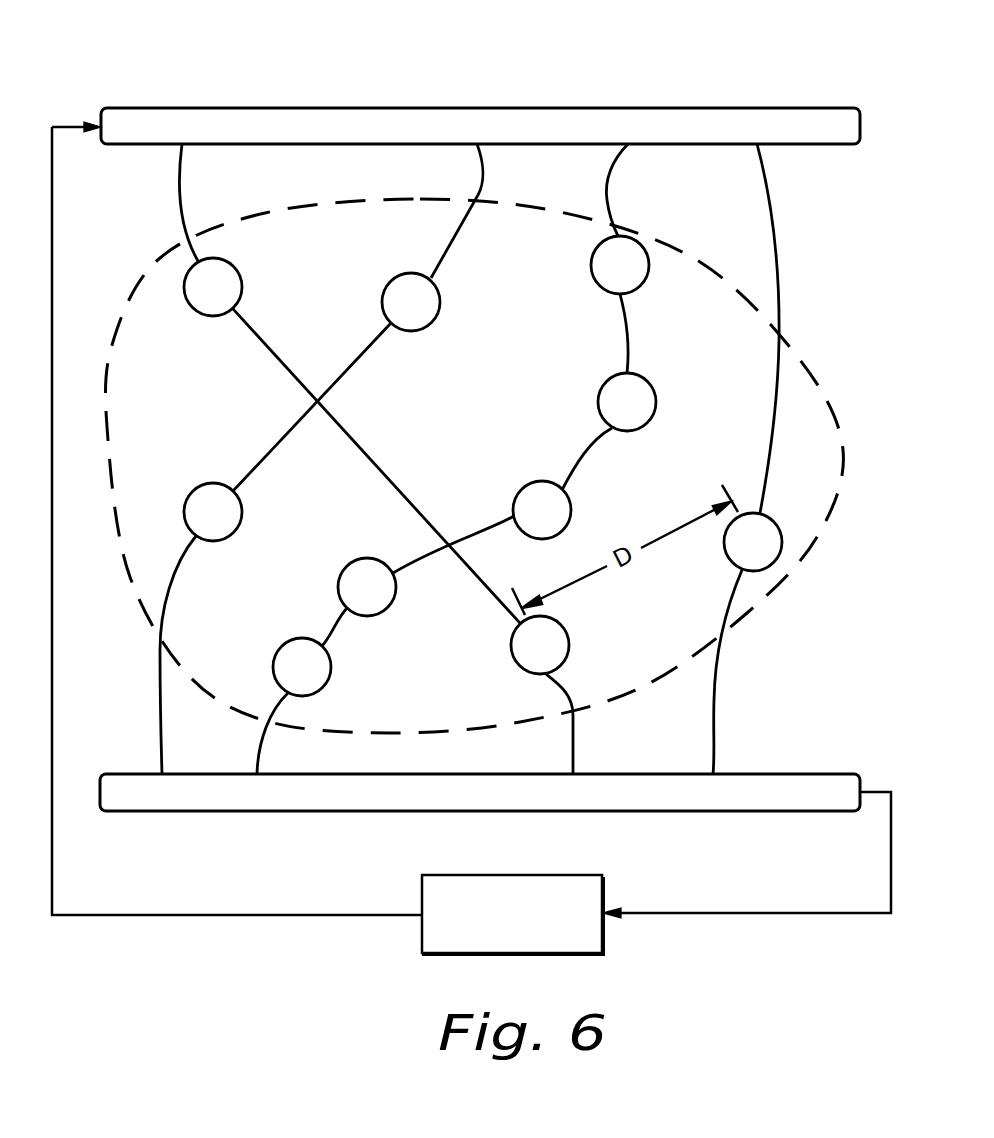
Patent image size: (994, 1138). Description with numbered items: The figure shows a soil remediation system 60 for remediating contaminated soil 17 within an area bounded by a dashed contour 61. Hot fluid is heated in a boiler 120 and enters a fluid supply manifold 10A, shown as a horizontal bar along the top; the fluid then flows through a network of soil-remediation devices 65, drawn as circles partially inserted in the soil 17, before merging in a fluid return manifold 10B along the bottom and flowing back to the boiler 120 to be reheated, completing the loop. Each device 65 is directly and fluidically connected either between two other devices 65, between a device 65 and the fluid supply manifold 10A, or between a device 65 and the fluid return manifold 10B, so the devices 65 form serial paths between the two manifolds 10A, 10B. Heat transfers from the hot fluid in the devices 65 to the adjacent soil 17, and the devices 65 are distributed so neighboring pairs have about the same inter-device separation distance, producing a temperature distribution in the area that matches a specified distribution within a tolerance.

The soil remediation system 60 is at (636, 90).
The fluid supply manifold 10A is at (795, 139).
The fluid return manifold 10B is at (797, 802).
The boiler 120 is at (422, 893).
The contour 61 is at (808, 348).
The soil 17 is at (495, 419).
The soil-remediation devices 65 is at (229, 299).